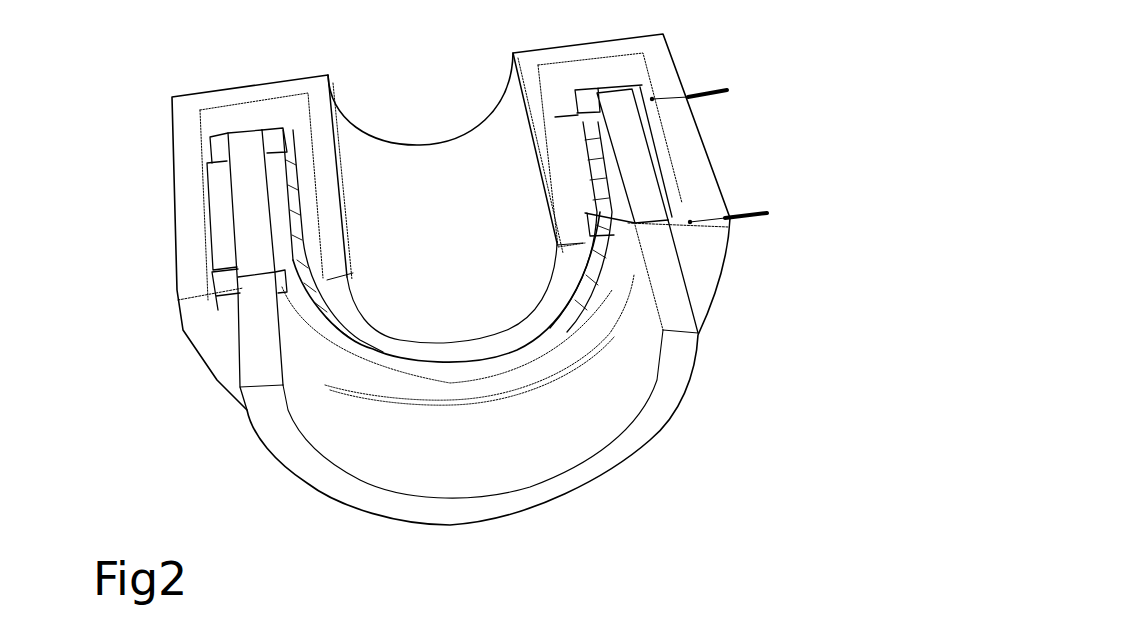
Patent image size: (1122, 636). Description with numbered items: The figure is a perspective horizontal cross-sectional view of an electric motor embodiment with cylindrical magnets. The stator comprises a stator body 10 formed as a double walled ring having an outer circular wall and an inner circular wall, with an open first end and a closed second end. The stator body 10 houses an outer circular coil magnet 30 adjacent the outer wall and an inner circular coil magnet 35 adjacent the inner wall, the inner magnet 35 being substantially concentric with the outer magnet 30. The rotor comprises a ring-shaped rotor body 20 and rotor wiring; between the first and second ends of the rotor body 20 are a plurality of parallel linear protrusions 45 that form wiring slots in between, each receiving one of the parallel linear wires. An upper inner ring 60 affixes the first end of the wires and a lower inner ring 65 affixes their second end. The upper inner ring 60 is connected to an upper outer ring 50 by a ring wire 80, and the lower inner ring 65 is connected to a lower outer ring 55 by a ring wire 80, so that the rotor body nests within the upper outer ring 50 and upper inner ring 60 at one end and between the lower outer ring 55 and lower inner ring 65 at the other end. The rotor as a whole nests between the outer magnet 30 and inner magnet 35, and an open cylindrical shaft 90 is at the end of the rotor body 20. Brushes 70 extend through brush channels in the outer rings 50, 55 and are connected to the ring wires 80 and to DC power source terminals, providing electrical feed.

The stator body 10 is at (368, 155).
The rotor body 20 is at (647, 197).
The outer circular coil magnet 30 is at (222, 222).
The inner circular coil magnet 35 is at (307, 213).
The parallel linear protrusions 45 is at (593, 150).
The upper outer ring 50 is at (218, 280).
The lower outer ring 55 is at (215, 148).
The upper inner ring 60 is at (275, 268).
The lower inner ring 65 is at (270, 143).
The brushes 70 is at (727, 90).
The ring wire 80 is at (665, 213).
The open cylindrical shaft 90 is at (672, 312).